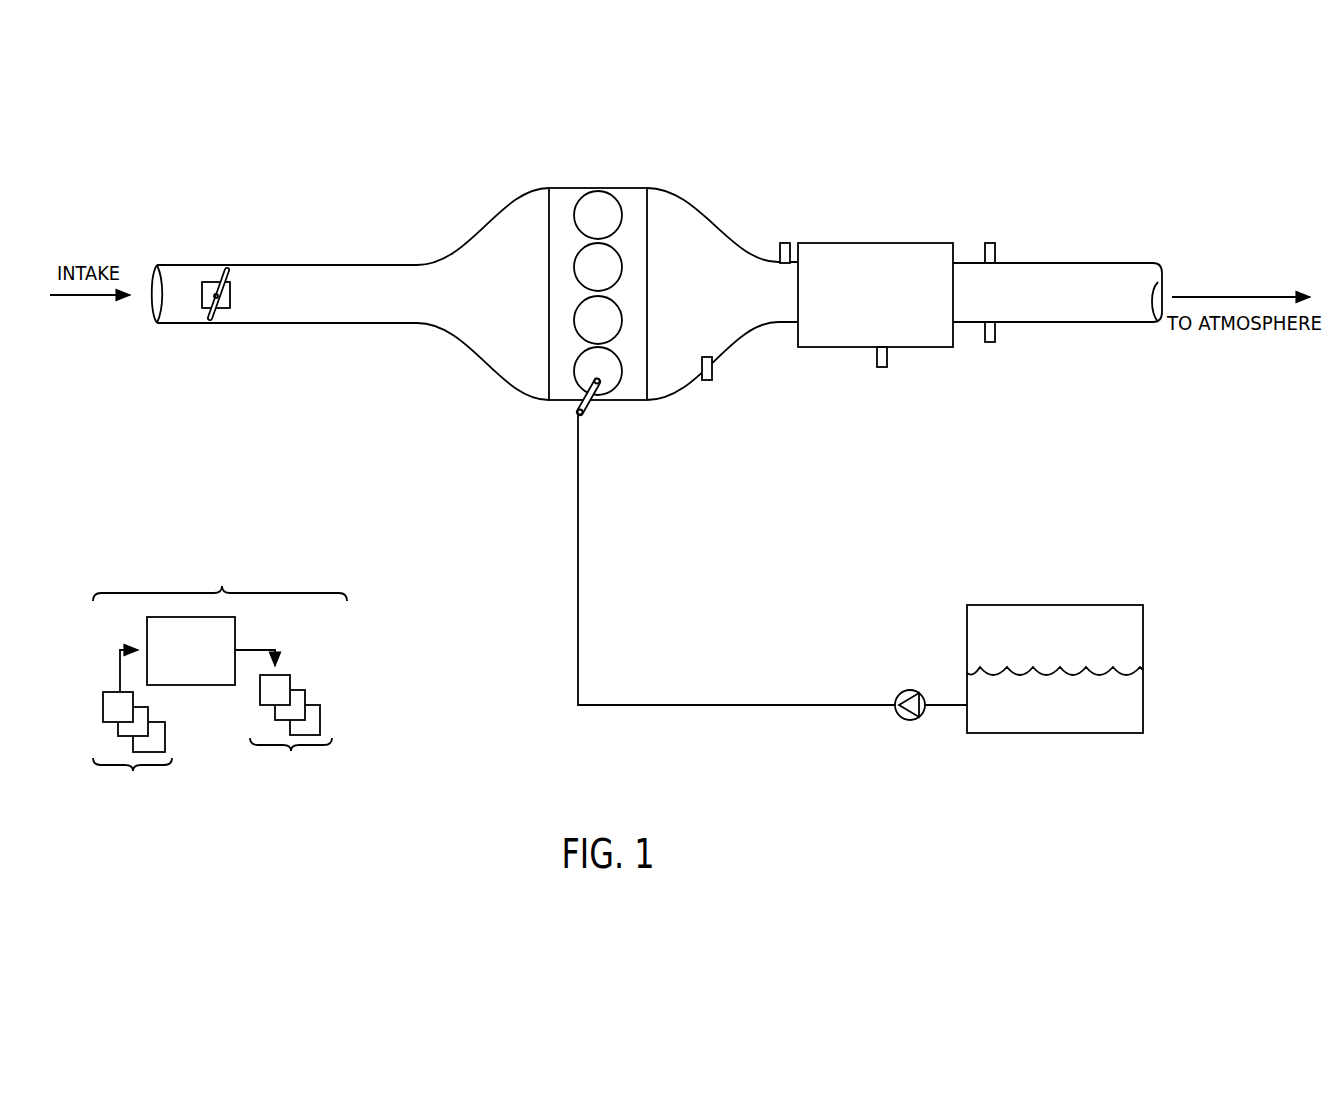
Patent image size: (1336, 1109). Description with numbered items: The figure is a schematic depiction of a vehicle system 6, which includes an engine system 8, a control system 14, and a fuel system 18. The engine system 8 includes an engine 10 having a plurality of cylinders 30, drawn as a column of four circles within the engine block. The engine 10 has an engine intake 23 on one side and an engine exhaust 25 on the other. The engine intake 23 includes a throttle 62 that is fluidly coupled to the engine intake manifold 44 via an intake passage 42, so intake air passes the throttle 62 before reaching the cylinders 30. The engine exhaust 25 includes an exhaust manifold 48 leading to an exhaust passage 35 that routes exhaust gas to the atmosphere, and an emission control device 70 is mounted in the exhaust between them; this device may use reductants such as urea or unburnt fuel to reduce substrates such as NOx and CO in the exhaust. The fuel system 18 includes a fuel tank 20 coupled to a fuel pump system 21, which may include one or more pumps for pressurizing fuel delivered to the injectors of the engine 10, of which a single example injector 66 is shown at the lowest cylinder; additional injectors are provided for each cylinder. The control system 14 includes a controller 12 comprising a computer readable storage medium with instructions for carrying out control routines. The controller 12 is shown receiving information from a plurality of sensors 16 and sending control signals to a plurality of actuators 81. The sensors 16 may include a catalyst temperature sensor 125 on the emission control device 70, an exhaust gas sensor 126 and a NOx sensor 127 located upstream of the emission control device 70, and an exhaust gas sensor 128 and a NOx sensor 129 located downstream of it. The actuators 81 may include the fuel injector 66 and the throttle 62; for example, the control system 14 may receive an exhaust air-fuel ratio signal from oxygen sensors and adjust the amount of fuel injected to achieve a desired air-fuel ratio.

The vehicle system 6 is at (230, 185).
The engine system 8 is at (772, 150).
The engine 10 is at (647, 278).
The controller 12 is at (191, 651).
The control system 14 is at (220, 571).
The sensors 16 is at (132, 731).
The fuel system 18 is at (1066, 774).
The fuel tank 20 is at (1158, 705).
The fuel pump system 21 is at (912, 691).
The engine intake 23 is at (352, 240).
The engine exhaust 25 is at (992, 203).
The cylinders 30 is at (618, 207).
The exhaust passage 35 is at (1105, 263).
The intake passage 42 is at (266, 326).
The engine intake manifold 44 is at (502, 293).
The exhaust manifold 48 is at (722, 294).
The throttle 62 is at (240, 299).
The fuel injector 66 is at (590, 404).
The emission control device 70 is at (856, 243).
The actuators 81 is at (285, 723).
The catalyst temperature sensor 125 is at (876, 354).
The exhaust gas sensor 126 is at (712, 363).
The NOx sensor 127 is at (779, 254).
The exhaust gas sensor 128 is at (984, 333).
The NOx sensor 129 is at (984, 254).